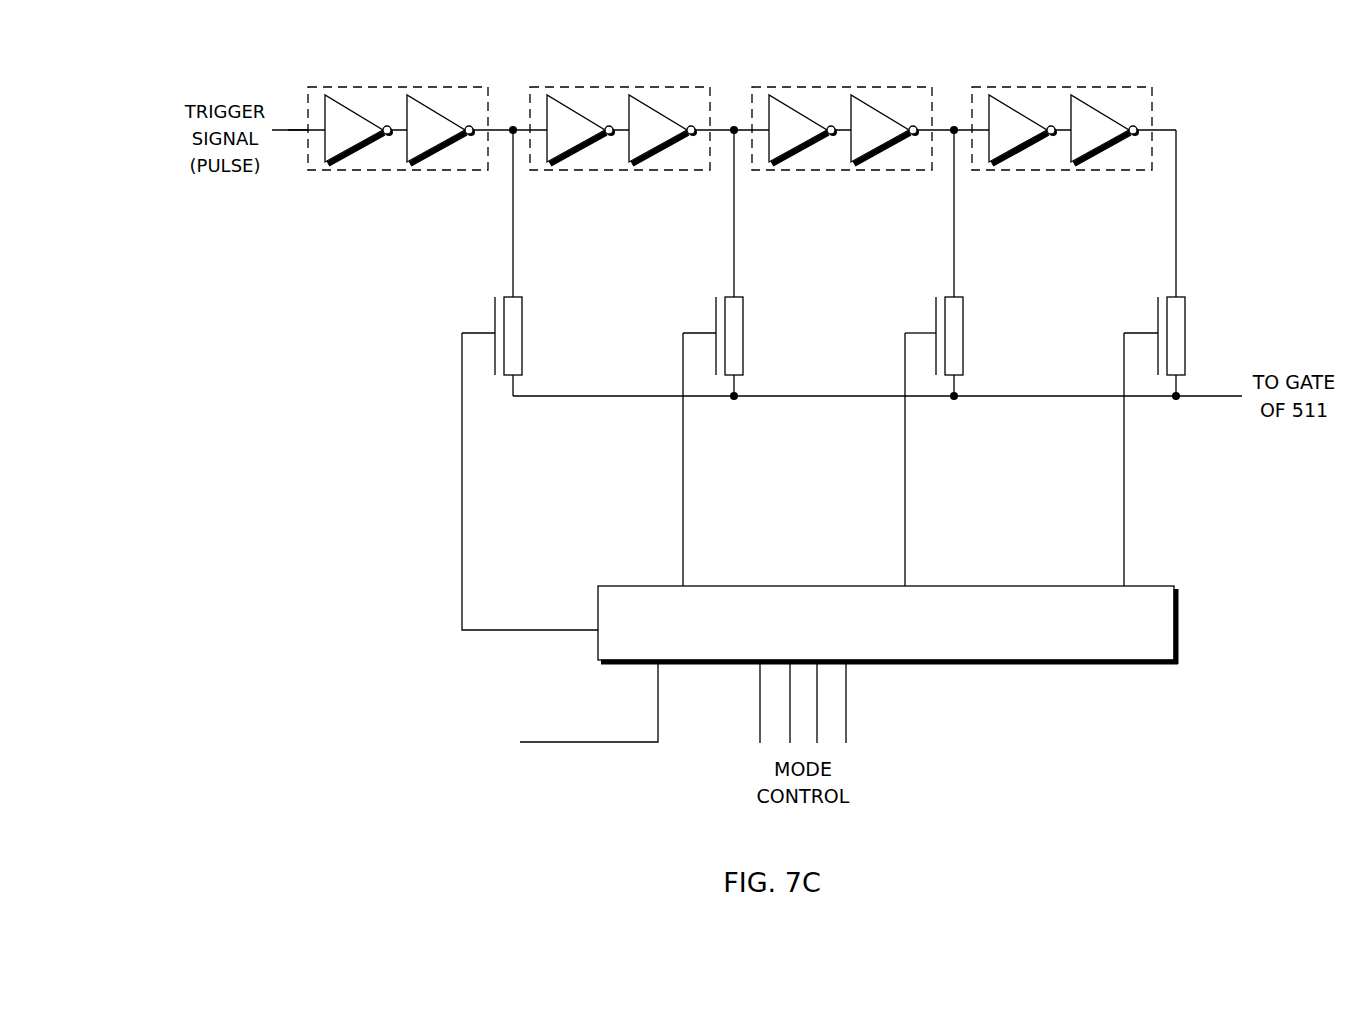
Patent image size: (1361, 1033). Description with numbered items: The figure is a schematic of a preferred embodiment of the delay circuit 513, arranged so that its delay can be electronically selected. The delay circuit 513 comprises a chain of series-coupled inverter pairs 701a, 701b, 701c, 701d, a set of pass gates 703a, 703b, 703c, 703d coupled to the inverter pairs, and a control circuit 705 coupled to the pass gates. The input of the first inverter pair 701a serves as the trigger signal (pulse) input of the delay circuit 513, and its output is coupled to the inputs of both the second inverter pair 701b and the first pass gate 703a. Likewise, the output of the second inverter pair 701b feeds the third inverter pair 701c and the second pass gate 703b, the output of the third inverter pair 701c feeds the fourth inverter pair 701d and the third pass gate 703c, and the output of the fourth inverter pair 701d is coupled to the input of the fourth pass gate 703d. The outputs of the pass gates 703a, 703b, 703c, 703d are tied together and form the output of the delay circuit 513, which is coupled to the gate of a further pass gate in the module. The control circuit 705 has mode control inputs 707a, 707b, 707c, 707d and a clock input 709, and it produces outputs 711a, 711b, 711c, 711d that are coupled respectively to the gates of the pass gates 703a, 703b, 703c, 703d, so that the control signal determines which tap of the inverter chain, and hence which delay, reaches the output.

The delay circuit 513 is at (1262, 68).
The first inverter pair 701a is at (468, 85).
The second inverter pair 701b is at (683, 85).
The third inverter pair 701c is at (893, 85).
The fourth inverter pair 701d is at (1093, 85).
The first pass gate 703a is at (525, 326).
The second pass gate 703b is at (746, 326).
The third pass gate 703c is at (966, 326).
The fourth pass gate 703d is at (1188, 326).
The control circuit 705 is at (1080, 585).
The mode control input 707a is at (760, 693).
The mode control input 707b is at (790, 718).
The mode control input 707c is at (817, 690).
The mode control input 707d is at (846, 709).
The clock input 709 is at (622, 740).
The control circuit output 711a is at (575, 626).
The control circuit output 711b is at (683, 540).
The control circuit output 711c is at (905, 540).
The control circuit output 711d is at (1124, 540).